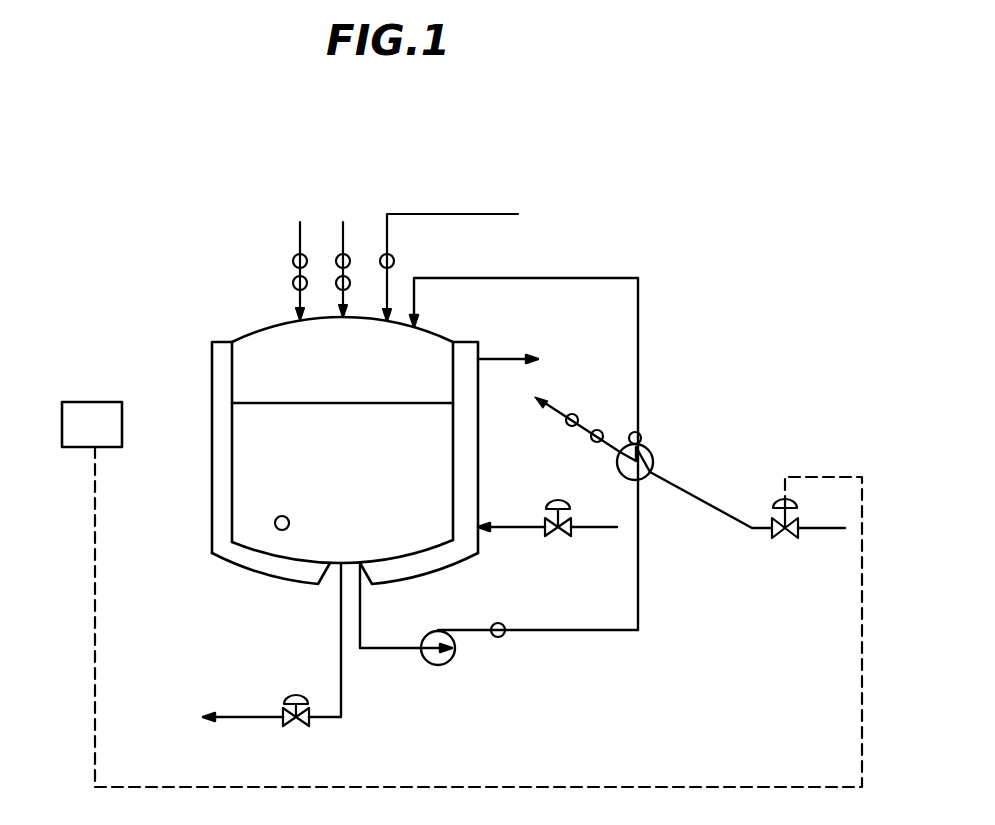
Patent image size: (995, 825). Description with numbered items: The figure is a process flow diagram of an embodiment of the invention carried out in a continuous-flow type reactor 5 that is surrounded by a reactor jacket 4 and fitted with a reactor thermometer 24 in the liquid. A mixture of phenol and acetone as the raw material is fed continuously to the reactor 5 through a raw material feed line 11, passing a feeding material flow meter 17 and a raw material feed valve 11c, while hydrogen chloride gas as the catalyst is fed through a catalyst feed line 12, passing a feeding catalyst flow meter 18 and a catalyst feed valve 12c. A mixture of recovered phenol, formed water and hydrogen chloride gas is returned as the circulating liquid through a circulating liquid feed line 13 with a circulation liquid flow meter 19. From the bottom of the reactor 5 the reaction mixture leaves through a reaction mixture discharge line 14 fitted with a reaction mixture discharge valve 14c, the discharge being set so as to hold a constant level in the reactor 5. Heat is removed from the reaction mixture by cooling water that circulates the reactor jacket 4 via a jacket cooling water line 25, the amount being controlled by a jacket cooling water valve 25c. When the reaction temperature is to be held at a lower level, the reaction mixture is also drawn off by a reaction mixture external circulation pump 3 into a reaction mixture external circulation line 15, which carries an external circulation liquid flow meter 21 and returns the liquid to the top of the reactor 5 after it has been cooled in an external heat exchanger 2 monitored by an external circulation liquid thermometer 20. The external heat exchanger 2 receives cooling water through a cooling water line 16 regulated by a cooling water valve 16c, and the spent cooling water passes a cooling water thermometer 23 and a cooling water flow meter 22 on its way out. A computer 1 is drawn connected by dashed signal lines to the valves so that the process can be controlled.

The computer 1 is at (92, 424).
The external heat exchanger 2 is at (658, 465).
The reaction mixture external circulation pump 3 is at (438, 662).
The reactor jacket 4 is at (345, 450).
The reactor 5 is at (342, 439).
The raw material feed line 11 is at (299, 257).
The raw material feed valve 11c is at (281, 289).
The catalyst feed line 12 is at (342, 256).
The catalyst feed valve 12c is at (362, 289).
The circulating liquid feed line 13 is at (450, 256).
The reaction mixture discharge line 14 is at (224, 720).
The reaction mixture discharge valve 14c is at (305, 728).
The reaction mixture external circulation line 15 is at (524, 454).
The cooling water line 16 is at (825, 514).
The cooling water valve 16c is at (796, 535).
The feeding material flow meter 17 is at (284, 250).
The feeding catalyst flow meter 18 is at (330, 250).
The circulation liquid flow meter 19 is at (374, 250).
The external circulation liquid thermometer 20 is at (652, 433).
The external circulation liquid flow meter 21 is at (507, 645).
The cooling water flow meter 22 is at (550, 421).
The cooling water thermometer 23 is at (599, 425).
The reactor thermometer 24 is at (287, 509).
The jacket cooling water line 25 is at (547, 516).
The jacket cooling water valve 25c is at (568, 533).